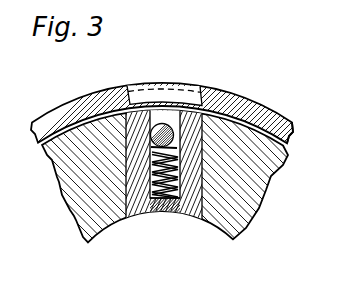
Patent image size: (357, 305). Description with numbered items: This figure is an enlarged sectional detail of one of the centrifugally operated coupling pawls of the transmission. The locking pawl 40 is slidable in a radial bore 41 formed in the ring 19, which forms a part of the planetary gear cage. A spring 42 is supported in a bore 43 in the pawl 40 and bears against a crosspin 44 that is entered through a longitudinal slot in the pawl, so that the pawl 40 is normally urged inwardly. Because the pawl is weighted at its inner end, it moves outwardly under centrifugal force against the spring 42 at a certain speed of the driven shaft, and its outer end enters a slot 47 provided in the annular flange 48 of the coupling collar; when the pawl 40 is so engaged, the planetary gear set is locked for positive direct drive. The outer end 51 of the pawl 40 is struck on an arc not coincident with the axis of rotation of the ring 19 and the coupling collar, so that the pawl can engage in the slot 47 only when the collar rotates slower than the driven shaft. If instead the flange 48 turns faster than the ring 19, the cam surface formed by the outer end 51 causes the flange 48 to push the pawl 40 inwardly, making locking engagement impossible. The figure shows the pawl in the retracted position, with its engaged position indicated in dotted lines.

The ring 19 is at (261, 183).
The locking pawl 40 is at (190, 218).
The radial bore 41 is at (125, 213).
The spring 42 is at (163, 213).
The bore 43 is at (132, 218).
The crosspin 44 is at (218, 108).
The slot 47 is at (187, 89).
The annular flange 48 is at (289, 118).
The outer end 51 is at (138, 107).